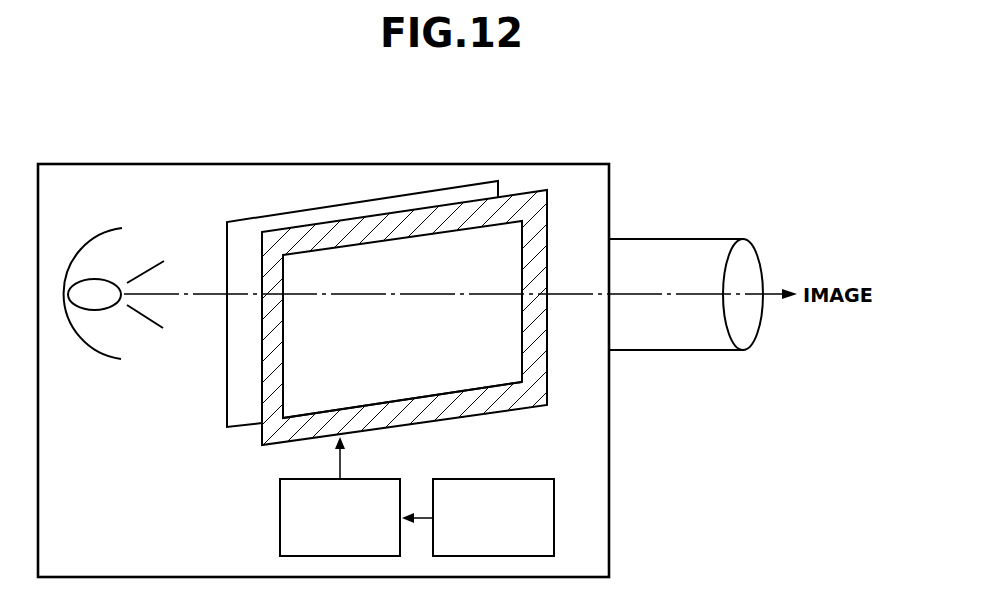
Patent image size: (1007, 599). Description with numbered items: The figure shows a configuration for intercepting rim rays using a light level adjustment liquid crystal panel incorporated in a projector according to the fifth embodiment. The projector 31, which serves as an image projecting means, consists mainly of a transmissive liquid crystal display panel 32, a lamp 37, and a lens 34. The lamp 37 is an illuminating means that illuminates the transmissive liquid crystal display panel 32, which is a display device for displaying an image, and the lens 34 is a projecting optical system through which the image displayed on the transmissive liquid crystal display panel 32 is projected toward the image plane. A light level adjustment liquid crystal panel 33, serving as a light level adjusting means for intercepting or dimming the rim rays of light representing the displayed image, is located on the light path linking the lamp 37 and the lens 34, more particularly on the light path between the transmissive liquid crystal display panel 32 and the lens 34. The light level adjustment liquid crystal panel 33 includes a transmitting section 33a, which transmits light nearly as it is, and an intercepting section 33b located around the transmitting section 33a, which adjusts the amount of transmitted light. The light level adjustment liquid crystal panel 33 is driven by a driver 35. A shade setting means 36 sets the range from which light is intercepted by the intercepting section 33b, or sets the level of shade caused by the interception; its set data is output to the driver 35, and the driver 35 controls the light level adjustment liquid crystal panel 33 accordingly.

The projector 31 is at (240, 182).
The transmissive liquid crystal display panel 32 is at (448, 197).
The light level adjustment liquid crystal panel 33 is at (487, 260).
The transmitting section 33a is at (480, 368).
The intercepting section 33b is at (548, 344).
The lens 34 is at (683, 237).
The driver 35 is at (357, 479).
The shade setting means 36 is at (498, 479).
The lamp 37 is at (100, 228).